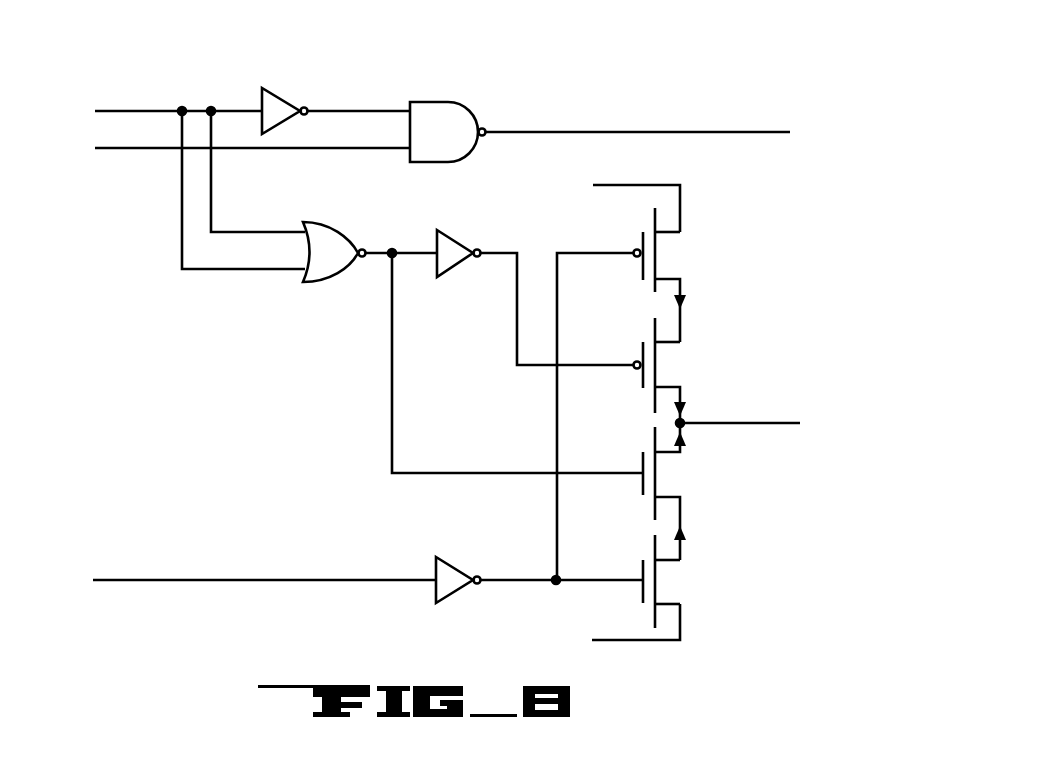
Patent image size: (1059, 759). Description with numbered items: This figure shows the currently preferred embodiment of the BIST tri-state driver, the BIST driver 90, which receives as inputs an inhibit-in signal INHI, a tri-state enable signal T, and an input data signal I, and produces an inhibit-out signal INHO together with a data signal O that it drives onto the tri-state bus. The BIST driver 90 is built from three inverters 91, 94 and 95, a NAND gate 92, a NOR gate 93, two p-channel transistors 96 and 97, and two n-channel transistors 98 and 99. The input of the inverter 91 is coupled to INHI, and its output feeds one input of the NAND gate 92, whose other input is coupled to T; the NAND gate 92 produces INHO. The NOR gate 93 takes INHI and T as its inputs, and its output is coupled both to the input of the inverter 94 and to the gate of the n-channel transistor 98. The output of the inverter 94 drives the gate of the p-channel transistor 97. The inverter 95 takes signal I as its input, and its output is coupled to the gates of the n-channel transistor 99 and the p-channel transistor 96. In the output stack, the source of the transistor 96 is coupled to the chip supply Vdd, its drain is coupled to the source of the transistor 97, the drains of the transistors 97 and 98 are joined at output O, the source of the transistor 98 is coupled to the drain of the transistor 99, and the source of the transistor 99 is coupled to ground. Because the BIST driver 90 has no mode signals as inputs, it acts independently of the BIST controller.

The BIST driver 90 is at (748, 72).
The inverter 91 is at (281, 98).
The NAND gate 92 is at (452, 143).
The NOR gate 93 is at (345, 264).
The inverter 94 is at (455, 242).
The inverter 95 is at (456, 566).
The p-channel transistor 96 is at (677, 261).
The p-channel transistor 97 is at (673, 372).
The n-channel transistor 98 is at (674, 476).
The n-channel transistor 99 is at (673, 585).